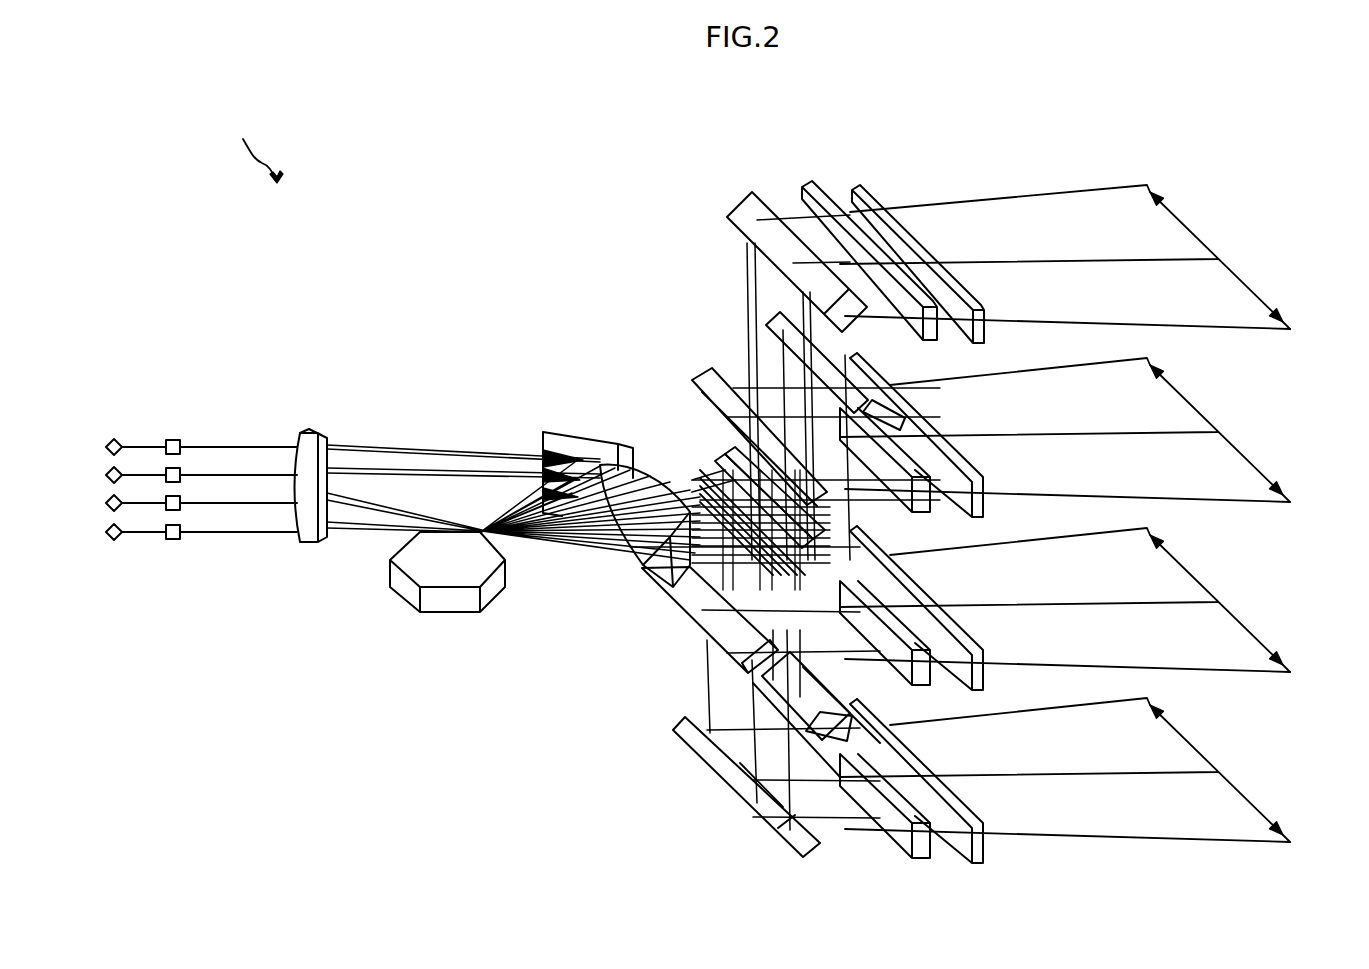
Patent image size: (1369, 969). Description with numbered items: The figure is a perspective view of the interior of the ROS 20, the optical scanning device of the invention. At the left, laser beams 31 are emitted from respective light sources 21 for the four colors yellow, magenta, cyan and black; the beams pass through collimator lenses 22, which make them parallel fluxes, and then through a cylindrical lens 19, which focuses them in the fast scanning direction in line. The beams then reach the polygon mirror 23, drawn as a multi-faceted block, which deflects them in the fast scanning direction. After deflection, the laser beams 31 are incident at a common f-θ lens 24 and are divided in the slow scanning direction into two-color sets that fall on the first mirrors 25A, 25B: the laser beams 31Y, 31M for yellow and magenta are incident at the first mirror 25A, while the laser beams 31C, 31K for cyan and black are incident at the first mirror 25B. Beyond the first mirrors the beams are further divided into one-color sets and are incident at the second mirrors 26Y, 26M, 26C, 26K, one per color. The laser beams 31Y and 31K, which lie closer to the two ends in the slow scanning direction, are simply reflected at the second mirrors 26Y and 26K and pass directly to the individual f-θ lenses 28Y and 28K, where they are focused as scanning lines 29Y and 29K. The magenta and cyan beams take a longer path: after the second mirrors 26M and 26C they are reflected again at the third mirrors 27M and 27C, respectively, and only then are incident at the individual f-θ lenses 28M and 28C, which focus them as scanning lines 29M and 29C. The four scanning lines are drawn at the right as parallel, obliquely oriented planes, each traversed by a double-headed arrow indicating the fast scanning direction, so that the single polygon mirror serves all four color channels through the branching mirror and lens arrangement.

The ROS 20 is at (253, 143).
The light sources 21 is at (114, 438).
The collimator lenses 22 is at (173, 438).
The laser beams 31 is at (256, 442).
The cylindrical lens 19 is at (308, 430).
The polygon mirror 23 is at (448, 614).
The f-θ lens 24 is at (627, 548).
The first mirror 25A is at (723, 455).
The first mirror 25B is at (712, 470).
The third mirror 27C is at (702, 372).
The second mirror 26C is at (775, 306).
The second mirror 26K is at (745, 206).
The third mirror 27M is at (688, 592).
The second mirror 26M is at (833, 706).
The second mirror 26Y is at (723, 778).
The f-θ lens 28K is at (808, 186).
The f-θ lens 28C is at (927, 516).
The f-θ lens 28M is at (928, 692).
The f-θ lens 28Y is at (916, 861).
The scanning line 29K is at (1243, 272).
The scanning line 29C is at (1240, 441).
The scanning line 29M is at (1238, 616).
The scanning line 29Y is at (1252, 794).
The laser beam 31K is at (1210, 331).
The laser beam 31C is at (1245, 501).
The laser beam 31M is at (1222, 669).
The laser beam 31Y is at (1160, 839).